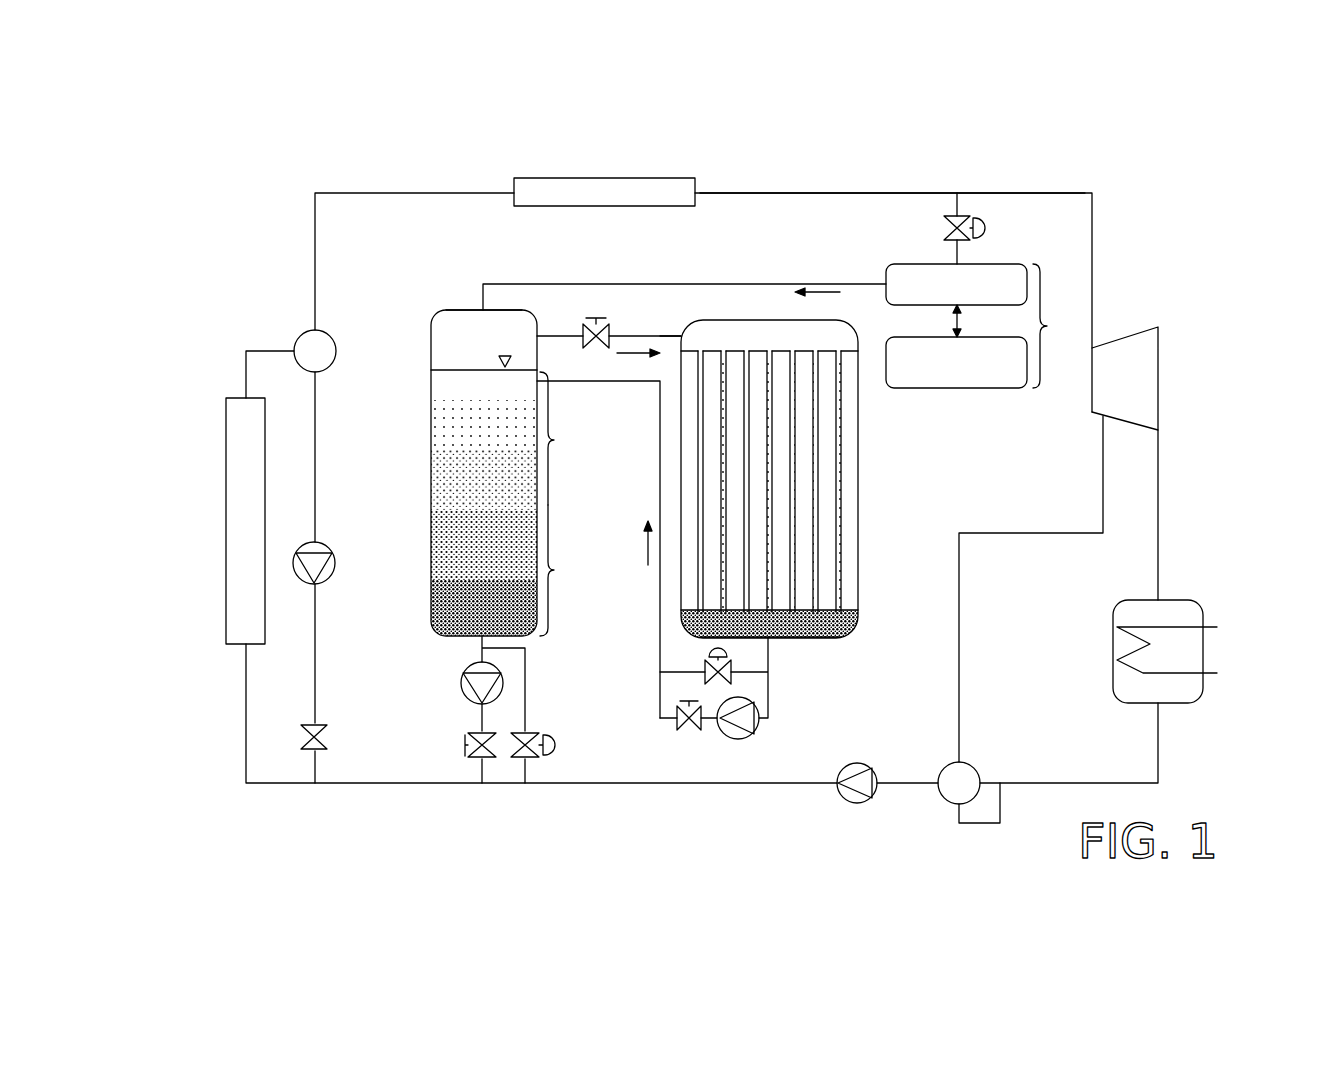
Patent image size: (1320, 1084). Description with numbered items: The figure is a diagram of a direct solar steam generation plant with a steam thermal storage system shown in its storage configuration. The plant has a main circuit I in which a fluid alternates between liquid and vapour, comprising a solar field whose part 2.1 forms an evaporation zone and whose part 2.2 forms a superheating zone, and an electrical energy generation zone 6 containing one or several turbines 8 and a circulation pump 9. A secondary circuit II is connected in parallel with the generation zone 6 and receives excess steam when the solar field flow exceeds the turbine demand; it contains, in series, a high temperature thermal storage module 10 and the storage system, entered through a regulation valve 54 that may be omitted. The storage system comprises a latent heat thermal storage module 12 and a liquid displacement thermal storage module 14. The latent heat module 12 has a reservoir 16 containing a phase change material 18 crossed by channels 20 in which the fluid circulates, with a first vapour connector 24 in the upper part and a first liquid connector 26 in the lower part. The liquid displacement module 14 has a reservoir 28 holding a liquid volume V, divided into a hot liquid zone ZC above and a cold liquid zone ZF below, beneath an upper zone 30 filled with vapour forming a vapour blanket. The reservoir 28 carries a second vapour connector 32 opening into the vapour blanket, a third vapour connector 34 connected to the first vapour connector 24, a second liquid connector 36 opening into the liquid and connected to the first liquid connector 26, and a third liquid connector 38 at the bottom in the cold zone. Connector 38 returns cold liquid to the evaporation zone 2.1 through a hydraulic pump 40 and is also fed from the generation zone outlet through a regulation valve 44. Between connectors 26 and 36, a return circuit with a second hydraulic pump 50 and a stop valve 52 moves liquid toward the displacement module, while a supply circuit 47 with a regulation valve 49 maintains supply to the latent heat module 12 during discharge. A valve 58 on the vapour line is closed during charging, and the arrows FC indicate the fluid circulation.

The main circuit I is at (305, 318).
The secondary circuit II is at (795, 251).
The evaporation zone 2.1 is at (230, 470).
The superheating zone 2.2 is at (594, 206).
The electrical energy generation zone 6 is at (1170, 583).
The turbine 8 is at (1150, 372).
The circulation pump 9 is at (846, 798).
The high temperature thermal storage module 10 is at (984, 326).
The latent heat thermal storage module 12 is at (807, 501).
The liquid displacement thermal storage module 14 is at (392, 486).
The reservoir 16 is at (860, 437).
The phase change material 18 is at (850, 565).
The channels 20 is at (856, 630).
The first vapour connector 24 is at (681, 326).
The first liquid connector 26 is at (772, 641).
The reservoir 28 is at (434, 308).
The upper zone 30 is at (454, 473).
The second vapour connector 32 is at (480, 307).
The third vapour connector 34 is at (542, 334).
The second liquid connector 36 is at (546, 369).
The third liquid connector 38 is at (482, 640).
The hydraulic pump 40 is at (461, 688).
The regulation valve 44 is at (552, 752).
The supply circuit 47 is at (680, 663).
The regulation valve 49 is at (733, 665).
The second hydraulic pump 50 is at (750, 722).
The stop valve 52 is at (465, 745).
The regulation valve 54 is at (942, 226).
The valve 58 is at (600, 318).
The liquid volume V is at (430, 446).
The hot liquid zone ZC is at (565, 438).
The cold liquid zone ZF is at (564, 570).
The fluid circulation arrows FC is at (728, 427).